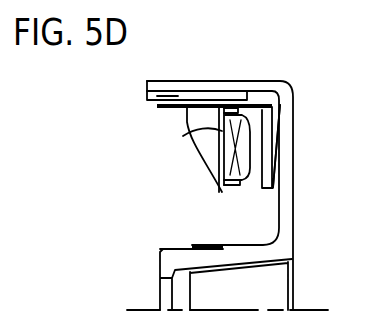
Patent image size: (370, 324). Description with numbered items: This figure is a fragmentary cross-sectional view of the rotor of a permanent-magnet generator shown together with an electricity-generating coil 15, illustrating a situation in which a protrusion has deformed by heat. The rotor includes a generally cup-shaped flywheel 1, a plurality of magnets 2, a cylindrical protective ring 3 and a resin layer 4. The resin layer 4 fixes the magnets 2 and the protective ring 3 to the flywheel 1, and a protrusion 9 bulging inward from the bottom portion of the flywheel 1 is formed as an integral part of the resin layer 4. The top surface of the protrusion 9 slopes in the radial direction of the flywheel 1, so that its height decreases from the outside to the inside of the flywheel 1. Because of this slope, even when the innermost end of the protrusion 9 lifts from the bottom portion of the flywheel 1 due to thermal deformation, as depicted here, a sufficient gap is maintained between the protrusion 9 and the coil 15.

The flywheel 1 is at (287, 97).
The magnets 2 is at (205, 100).
The protective ring 3 is at (183, 107).
The resin layer 4 is at (265, 97).
The protrusion 9 is at (277, 137).
The coil 15 is at (183, 136).